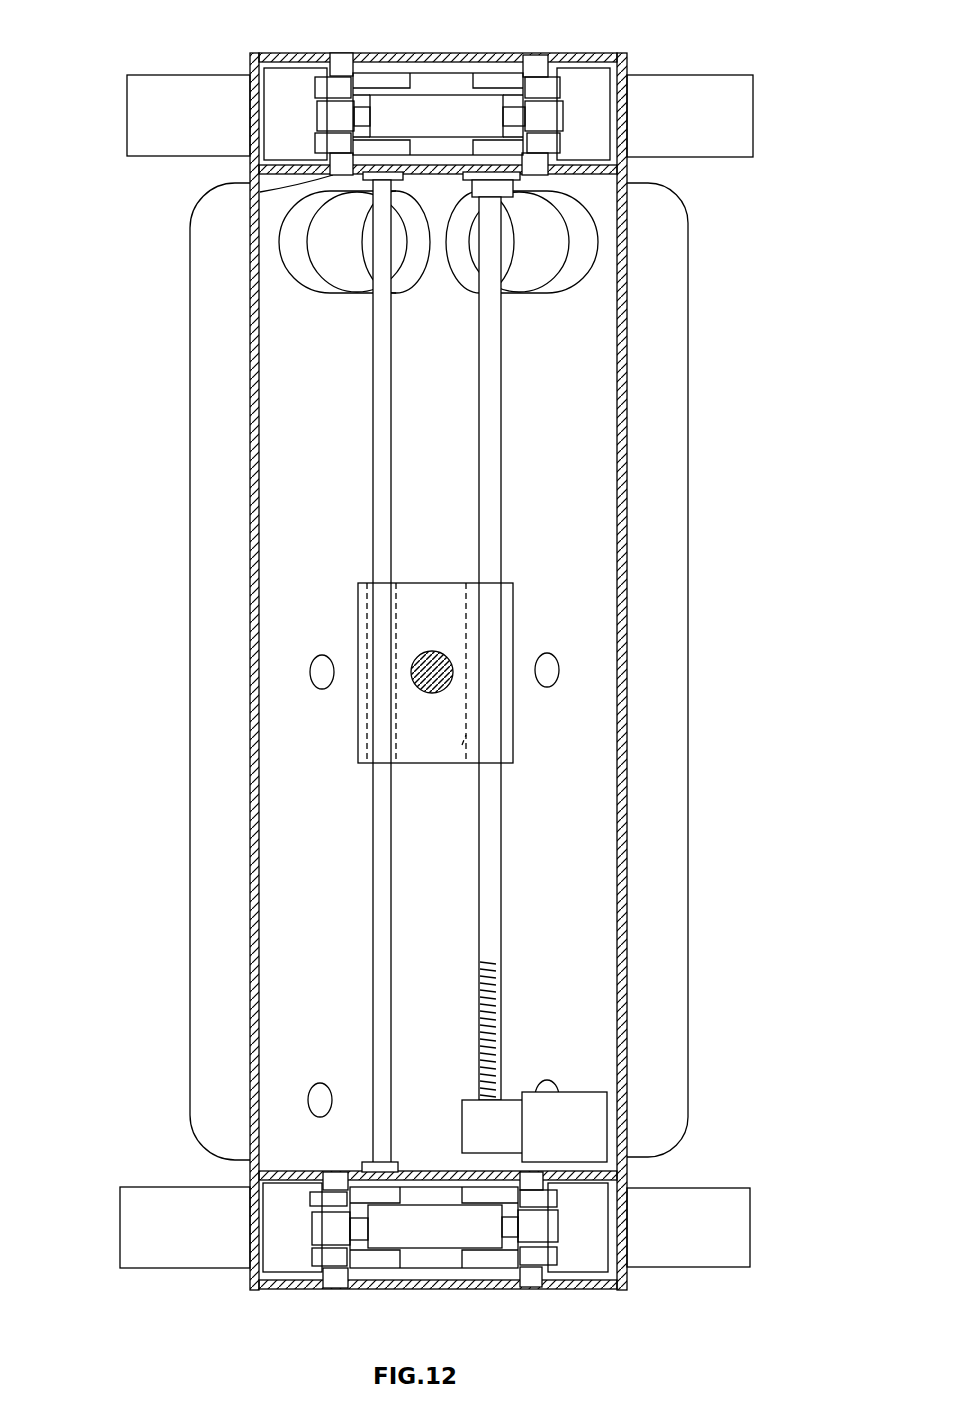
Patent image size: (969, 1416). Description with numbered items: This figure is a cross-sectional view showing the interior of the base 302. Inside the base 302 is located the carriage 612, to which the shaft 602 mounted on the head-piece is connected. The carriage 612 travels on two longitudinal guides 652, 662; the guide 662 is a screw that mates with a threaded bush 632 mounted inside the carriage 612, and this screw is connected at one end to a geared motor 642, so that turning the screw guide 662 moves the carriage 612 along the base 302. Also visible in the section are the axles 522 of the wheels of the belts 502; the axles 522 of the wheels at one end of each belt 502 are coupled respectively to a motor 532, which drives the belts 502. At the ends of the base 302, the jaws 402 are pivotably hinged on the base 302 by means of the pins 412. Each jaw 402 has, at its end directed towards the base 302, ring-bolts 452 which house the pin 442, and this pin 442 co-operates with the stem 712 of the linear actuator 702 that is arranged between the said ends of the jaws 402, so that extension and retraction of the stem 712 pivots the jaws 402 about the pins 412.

The base 302 is at (250, 690).
The jaws 402 is at (128, 128).
The pins 412 is at (340, 63).
The pin 442 is at (327, 92).
The ring-bolts 452 is at (356, 88).
The belts 502 is at (667, 885).
The axles 522 is at (322, 656).
The motor 532 is at (312, 290).
The shaft 602 is at (412, 683).
The carriage 612 is at (436, 590).
The threaded bush 632 is at (462, 745).
The geared motor 642 is at (580, 1095).
The longitudinal guide 652 is at (374, 433).
The longitudinal guide 662 is at (492, 428).
The linear actuator 702 is at (484, 106).
The stem 712 is at (320, 110).